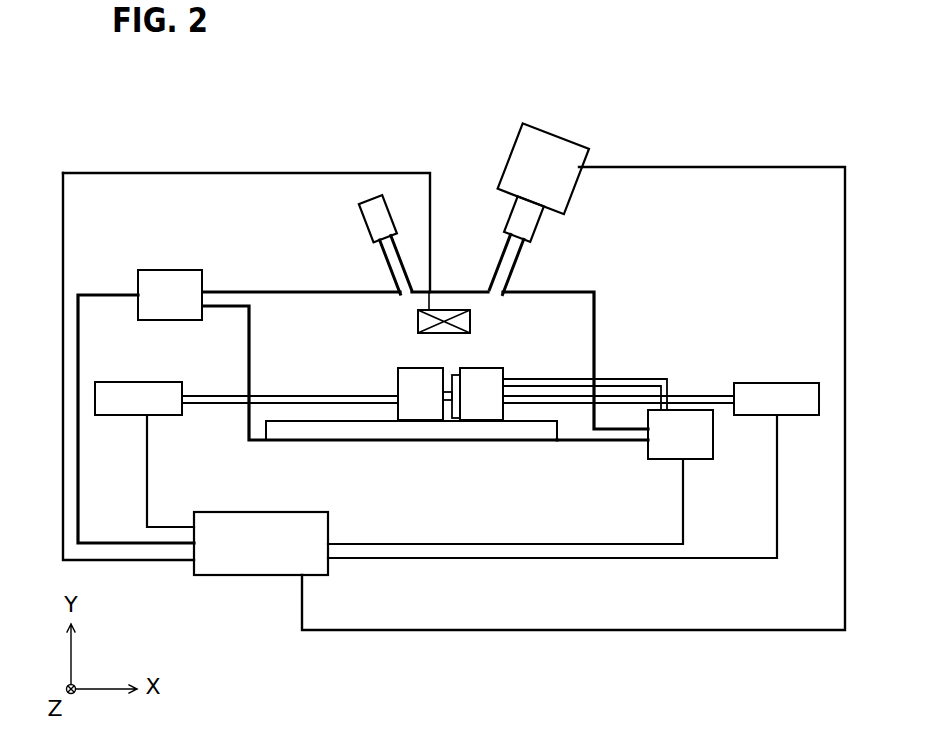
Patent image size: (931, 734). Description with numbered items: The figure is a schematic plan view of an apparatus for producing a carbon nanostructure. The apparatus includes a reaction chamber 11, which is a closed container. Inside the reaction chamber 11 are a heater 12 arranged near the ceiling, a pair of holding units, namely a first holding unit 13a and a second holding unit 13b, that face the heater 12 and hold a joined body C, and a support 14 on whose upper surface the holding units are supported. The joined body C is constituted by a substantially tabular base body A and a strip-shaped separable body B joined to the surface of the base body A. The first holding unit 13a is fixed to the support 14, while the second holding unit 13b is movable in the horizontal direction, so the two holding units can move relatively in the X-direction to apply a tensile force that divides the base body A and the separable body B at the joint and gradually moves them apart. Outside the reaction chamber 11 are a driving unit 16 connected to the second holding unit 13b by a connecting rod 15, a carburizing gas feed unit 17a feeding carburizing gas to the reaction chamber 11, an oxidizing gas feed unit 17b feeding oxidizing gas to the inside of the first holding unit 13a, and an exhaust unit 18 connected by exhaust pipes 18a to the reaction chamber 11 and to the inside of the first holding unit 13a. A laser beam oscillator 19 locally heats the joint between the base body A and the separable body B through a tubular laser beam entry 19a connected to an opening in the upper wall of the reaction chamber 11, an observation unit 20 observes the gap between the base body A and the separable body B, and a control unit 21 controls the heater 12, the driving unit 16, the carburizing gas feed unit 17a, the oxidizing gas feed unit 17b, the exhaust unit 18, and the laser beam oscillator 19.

The reaction chamber 11 is at (573, 291).
The heater 12 is at (418, 322).
The first holding unit 13a is at (494, 368).
The second holding unit 13b is at (405, 368).
The support 14 is at (540, 433).
The connecting rod 15 is at (203, 404).
The driving unit 16 is at (120, 409).
The carburizing gas feed unit 17a is at (168, 278).
The oxidizing gas feed unit 17b is at (780, 391).
The exhaust unit 18 is at (702, 456).
The exhaust pipes 18a is at (608, 378).
The laser beam oscillator 19 is at (552, 142).
The laser beam entry 19a is at (494, 273).
The observation unit 20 is at (361, 201).
The control unit 21 is at (243, 567).
The base body A is at (449, 371).
The separable body B is at (437, 394).
The joined body C is at (457, 418).